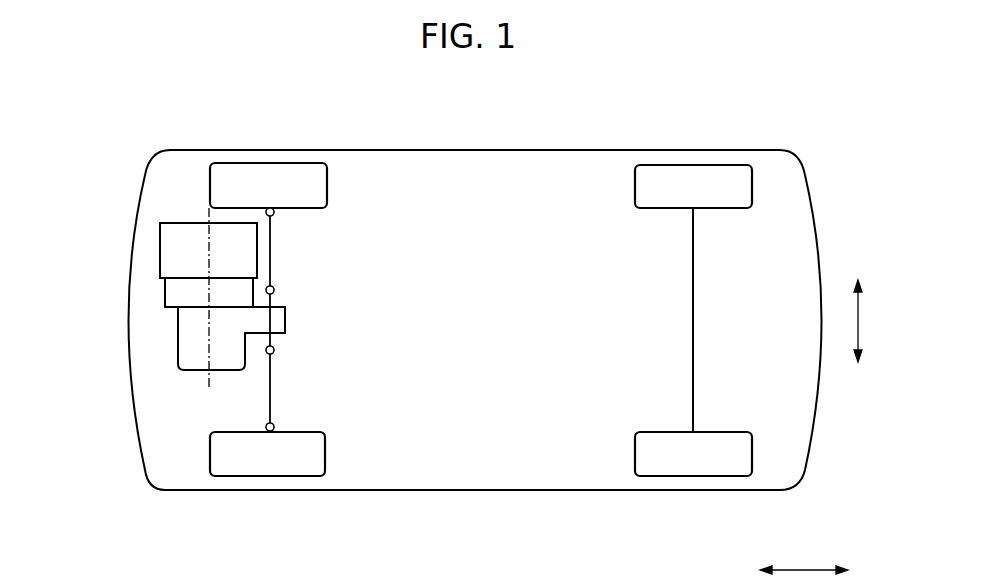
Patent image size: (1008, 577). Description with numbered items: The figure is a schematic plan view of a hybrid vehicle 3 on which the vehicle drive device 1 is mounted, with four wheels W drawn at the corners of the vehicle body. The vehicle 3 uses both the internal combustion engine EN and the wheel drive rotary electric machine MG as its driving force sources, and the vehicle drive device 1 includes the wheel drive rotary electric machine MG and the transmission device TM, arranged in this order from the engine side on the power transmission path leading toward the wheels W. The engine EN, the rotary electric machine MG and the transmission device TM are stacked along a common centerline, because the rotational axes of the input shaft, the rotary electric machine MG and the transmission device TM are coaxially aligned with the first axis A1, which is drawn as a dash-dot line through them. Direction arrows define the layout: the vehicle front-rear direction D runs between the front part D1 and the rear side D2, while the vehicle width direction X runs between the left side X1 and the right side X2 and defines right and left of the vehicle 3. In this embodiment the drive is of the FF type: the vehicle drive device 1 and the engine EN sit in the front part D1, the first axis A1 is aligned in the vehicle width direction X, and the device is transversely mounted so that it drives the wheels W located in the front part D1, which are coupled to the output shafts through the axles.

The vehicle drive device 1 is at (108, 163).
The vehicle 3 is at (503, 150).
The wheels W is at (293, 170).
The internal combustion engine EN is at (167, 244).
The wheel drive rotary electric machine MG is at (173, 295).
The transmission device TM is at (185, 347).
The first axis A1 is at (204, 314).
The vehicle width direction X is at (865, 321).
The left direction X1 is at (856, 379).
The right direction X2 is at (856, 264).
The vehicle front-rear direction D is at (804, 558).
The front part D1 is at (743, 567).
The rear part D2 is at (867, 567).